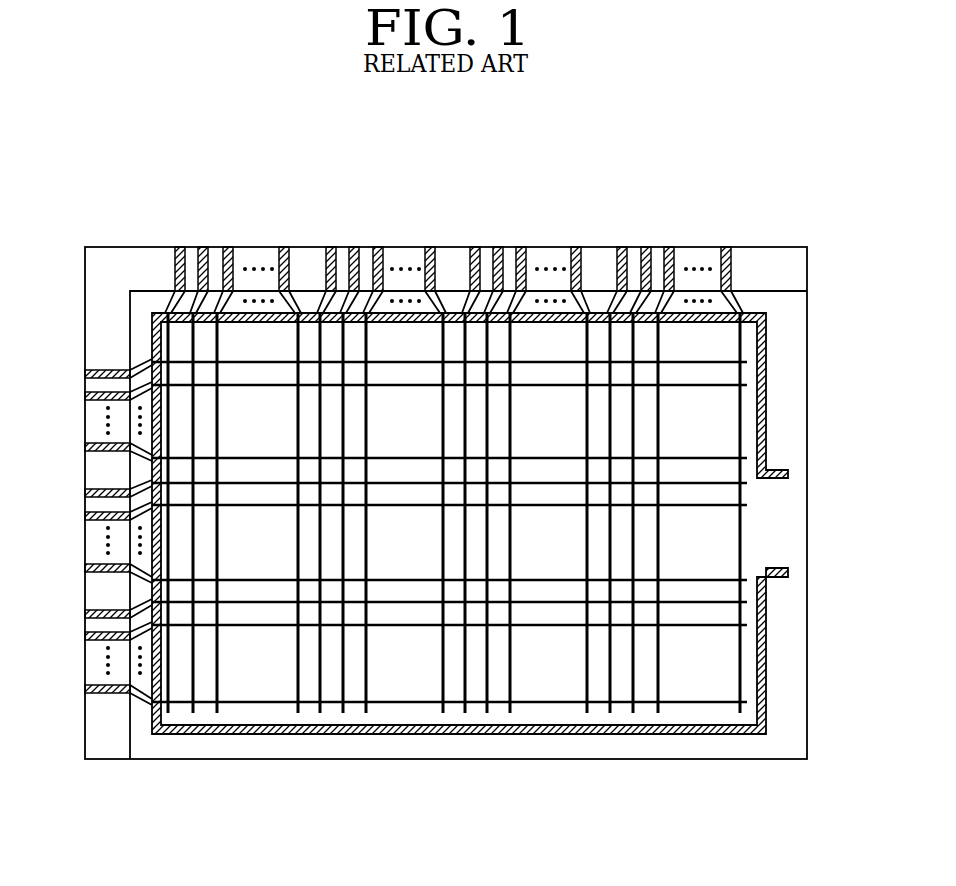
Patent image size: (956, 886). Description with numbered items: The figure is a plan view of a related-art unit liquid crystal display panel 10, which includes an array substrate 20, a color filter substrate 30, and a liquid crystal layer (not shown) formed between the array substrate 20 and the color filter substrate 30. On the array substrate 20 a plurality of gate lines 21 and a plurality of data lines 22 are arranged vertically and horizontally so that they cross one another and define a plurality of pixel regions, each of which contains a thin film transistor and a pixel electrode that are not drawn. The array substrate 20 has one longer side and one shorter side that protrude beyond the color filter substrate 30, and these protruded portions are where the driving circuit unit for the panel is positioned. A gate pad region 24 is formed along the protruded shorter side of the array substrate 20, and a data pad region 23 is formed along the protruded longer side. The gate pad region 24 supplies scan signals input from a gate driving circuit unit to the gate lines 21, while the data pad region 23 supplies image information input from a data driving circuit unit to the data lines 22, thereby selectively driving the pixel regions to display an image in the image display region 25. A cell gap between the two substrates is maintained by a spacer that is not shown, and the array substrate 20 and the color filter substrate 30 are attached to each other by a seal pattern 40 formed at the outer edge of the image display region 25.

The unit liquid crystal display panel 10 is at (92, 227).
The array substrate 20 is at (793, 272).
The gate lines 21 is at (717, 702).
The data lines 22 is at (742, 645).
The data pad region 23 is at (731, 237).
The gate pad region 24 is at (77, 370).
The image display region 25 is at (421, 434).
The color filter substrate 30 is at (795, 331).
The seal pattern 40 is at (766, 396).